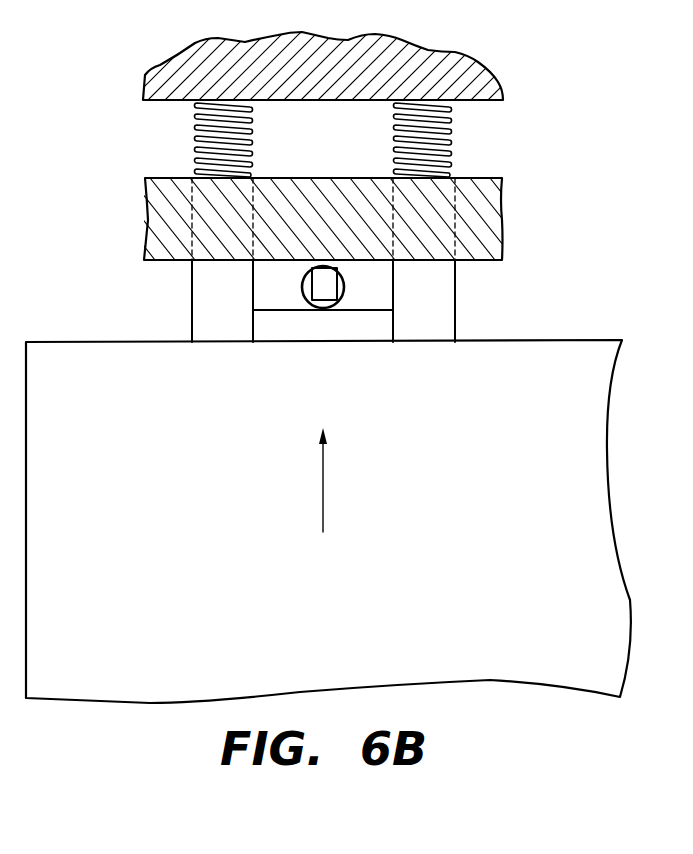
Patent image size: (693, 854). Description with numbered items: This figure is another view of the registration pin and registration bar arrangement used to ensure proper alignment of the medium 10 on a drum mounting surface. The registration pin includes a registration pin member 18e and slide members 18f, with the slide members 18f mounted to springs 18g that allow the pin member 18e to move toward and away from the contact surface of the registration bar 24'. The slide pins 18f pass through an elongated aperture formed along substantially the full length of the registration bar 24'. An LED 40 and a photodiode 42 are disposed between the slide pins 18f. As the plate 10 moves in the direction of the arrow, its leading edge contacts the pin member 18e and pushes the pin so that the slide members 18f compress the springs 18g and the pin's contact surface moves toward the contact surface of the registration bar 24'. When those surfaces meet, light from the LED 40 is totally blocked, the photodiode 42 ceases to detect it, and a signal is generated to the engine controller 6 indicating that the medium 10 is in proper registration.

The medium 10 is at (580, 496).
The registration pin member 18e is at (380, 328).
The slide members 18f is at (437, 292).
The springs 18g is at (443, 143).
The registration bar 24' is at (338, 219).
The LED 40 is at (302, 290).
The photodiode 42 is at (321, 283).
The engine controller 6 is at (7, 287).